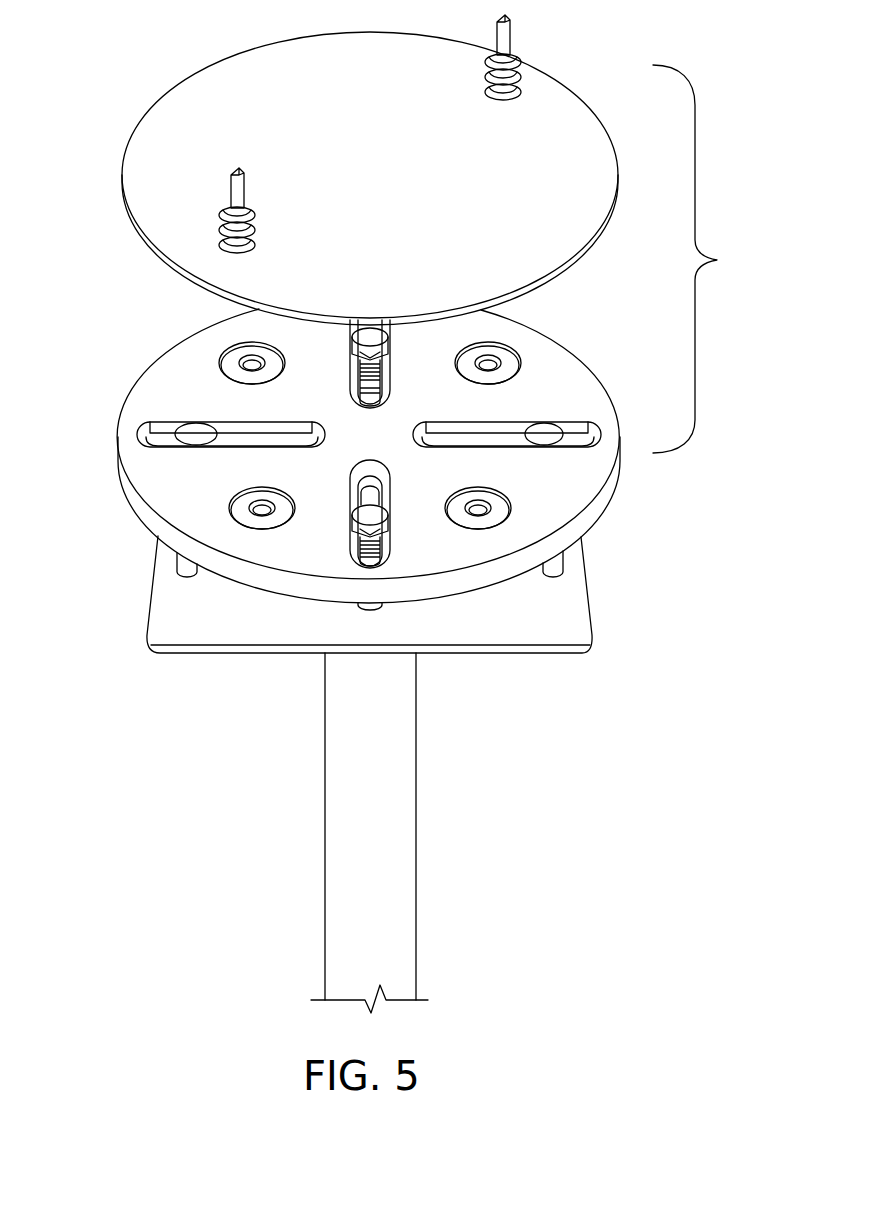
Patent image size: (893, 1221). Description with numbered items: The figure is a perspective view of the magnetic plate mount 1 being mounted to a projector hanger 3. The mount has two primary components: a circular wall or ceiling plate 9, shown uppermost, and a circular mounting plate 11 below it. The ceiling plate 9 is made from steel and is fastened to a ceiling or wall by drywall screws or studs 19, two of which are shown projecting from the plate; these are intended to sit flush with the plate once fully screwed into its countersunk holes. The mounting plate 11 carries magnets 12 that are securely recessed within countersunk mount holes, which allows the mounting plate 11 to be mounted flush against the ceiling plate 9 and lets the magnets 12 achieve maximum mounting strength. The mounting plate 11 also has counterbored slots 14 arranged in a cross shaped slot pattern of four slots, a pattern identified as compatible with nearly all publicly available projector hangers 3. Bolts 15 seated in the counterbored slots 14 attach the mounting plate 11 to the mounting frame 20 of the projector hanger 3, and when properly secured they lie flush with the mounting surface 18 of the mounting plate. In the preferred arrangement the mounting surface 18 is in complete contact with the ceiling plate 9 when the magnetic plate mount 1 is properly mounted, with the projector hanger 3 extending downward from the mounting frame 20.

The magnetic plate mount 1 is at (717, 260).
The projector hanger 3 is at (417, 809).
The wall or ceiling plate 9 is at (131, 139).
The mounting plate 11 is at (131, 505).
The magnets 12 is at (498, 363).
The counterbored slots 14 is at (150, 422).
The bolts 15 is at (150, 443).
The mounting surface 18 is at (383, 427).
The drywall screw or stud 19 is at (513, 25).
The mounting frame 20 is at (593, 627).